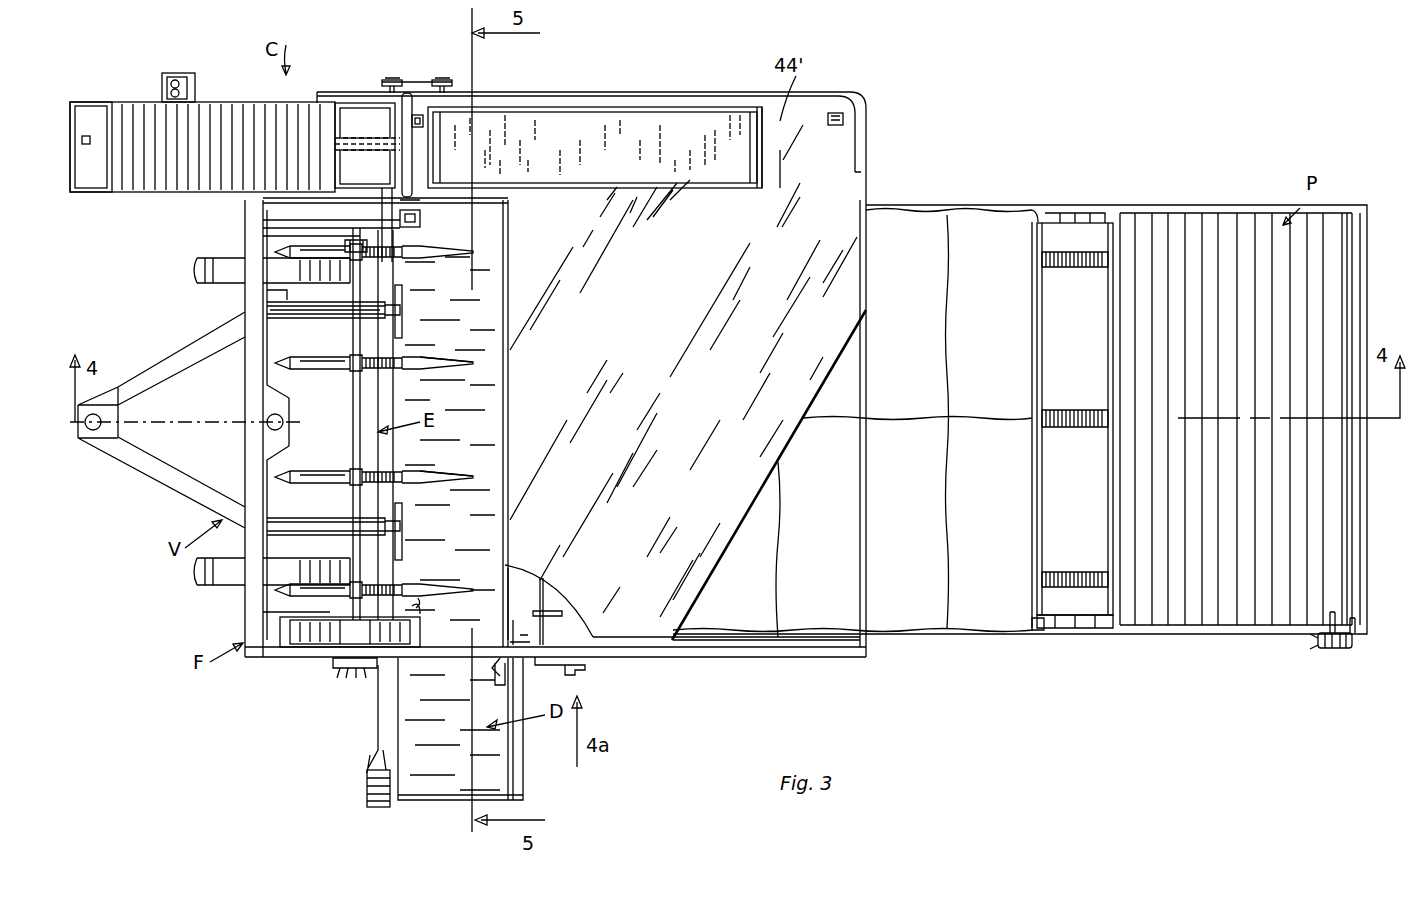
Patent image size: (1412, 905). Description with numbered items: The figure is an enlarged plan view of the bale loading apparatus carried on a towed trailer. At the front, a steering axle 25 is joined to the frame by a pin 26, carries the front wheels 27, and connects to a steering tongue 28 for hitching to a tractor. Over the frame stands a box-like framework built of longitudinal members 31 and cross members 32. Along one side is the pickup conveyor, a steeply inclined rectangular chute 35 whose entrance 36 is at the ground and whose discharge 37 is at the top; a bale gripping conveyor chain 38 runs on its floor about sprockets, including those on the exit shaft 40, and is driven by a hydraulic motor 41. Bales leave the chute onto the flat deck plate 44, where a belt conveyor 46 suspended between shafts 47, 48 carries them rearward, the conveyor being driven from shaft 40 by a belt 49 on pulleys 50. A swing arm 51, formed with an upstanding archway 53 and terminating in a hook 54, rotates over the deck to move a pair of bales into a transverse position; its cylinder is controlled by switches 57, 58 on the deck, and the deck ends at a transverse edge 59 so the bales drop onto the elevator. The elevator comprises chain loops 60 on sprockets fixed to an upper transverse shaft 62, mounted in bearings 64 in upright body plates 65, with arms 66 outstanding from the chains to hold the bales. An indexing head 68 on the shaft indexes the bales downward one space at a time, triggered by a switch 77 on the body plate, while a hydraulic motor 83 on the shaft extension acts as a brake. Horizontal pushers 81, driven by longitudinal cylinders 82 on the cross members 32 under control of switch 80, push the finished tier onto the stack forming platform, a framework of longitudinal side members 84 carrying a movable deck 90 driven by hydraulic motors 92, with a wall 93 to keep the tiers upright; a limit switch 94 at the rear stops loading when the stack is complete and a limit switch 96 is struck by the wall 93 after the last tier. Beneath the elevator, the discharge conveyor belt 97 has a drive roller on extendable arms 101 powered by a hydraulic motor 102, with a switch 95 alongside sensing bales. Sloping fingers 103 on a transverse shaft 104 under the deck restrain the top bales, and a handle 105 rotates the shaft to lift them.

The steering axle 25 is at (267, 358).
The pin 26 is at (283, 422).
The front wheels 27 is at (215, 280).
The steering tongue 28 is at (180, 486).
The longitudinal members 31 is at (505, 205).
The cross members 32 is at (245, 466).
The chute 35 is at (252, 104).
The entrance 36 is at (103, 104).
The discharge 37 is at (344, 105).
The bale gripping conveyor chain 38 is at (368, 124).
The shaft 40 is at (390, 80).
The hydraulic motor 41 is at (190, 78).
The deck plate 44 is at (850, 292).
The belt conveyor 46 is at (592, 108).
The shaft 47 is at (443, 80).
The shaft 48 is at (754, 106).
The belt 49 is at (405, 82).
The pulleys 50 is at (384, 80).
The swing arm 51 is at (660, 94).
The archway 53 is at (402, 165).
The hook 54 is at (862, 140).
The switch 57 is at (424, 120).
The switch 58 is at (830, 124).
The transverse edge 59 is at (508, 396).
The chain loops 60 is at (395, 258).
The upper transverse shaft 62 is at (353, 395).
The bearings 64 is at (344, 224).
The body plates 65 is at (283, 237).
The arms 66 is at (440, 367).
The indexing head 68 is at (330, 646).
The switch 77 is at (420, 610).
The switch 80 is at (405, 216).
The horizontal pushers 81 is at (402, 317).
The cylinders 82 is at (333, 318).
The hydraulic motor 83 is at (358, 668).
The longitudinal side members 84 is at (1146, 186).
The movable deck 90 is at (1240, 212).
The hydraulic motors 92 is at (1332, 648).
The wall 93 is at (1040, 524).
The limit switch 94 is at (1352, 626).
The switch 95 is at (505, 672).
The limit switch 96 is at (520, 640).
The conveyor belt 97 is at (506, 738).
The extendable arms 101 is at (378, 719).
The hydraulic motor 102 is at (372, 782).
The sloping fingers 103 is at (556, 612).
The transverse shaft 104 is at (545, 585).
The handle 105 is at (568, 672).